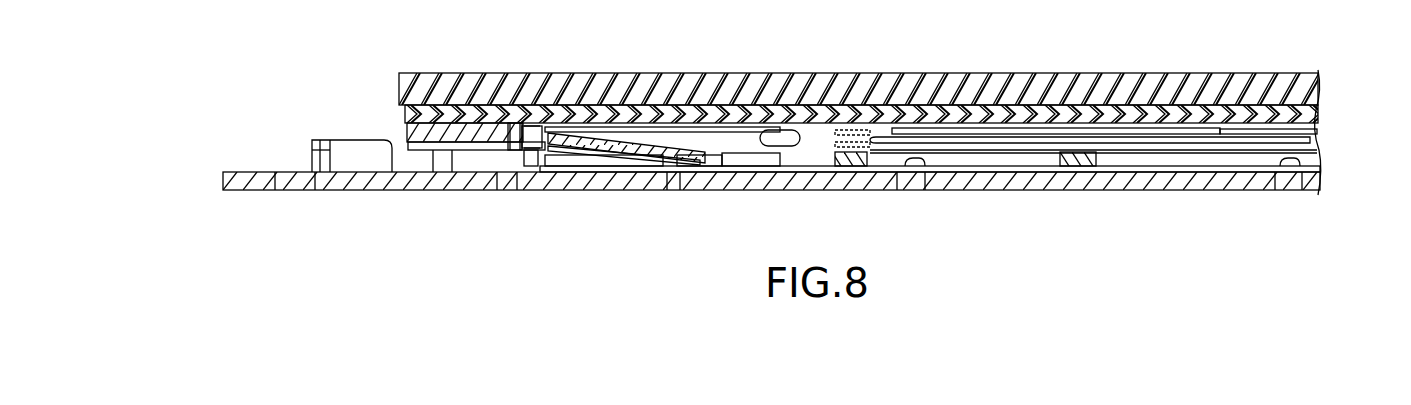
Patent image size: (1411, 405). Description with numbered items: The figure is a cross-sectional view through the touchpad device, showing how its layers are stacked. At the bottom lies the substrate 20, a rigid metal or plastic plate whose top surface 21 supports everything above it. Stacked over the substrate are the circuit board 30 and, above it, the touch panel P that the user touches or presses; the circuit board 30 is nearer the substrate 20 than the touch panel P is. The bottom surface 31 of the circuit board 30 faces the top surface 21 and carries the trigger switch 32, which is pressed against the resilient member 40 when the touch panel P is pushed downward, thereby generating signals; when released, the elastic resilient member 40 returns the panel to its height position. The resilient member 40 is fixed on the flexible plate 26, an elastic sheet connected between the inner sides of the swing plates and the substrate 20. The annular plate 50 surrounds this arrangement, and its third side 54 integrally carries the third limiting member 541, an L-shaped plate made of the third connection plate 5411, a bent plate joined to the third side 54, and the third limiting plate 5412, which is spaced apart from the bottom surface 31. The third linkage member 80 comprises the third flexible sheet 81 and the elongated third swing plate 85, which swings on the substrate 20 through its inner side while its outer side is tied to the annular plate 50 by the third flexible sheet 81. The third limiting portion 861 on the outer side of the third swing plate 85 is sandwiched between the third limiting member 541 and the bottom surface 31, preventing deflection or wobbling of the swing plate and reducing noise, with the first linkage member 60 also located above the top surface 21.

The touch panel P is at (1000, 82).
The substrate 20 is at (1078, 180).
The top surface 21 is at (1218, 128).
The flexible plate 26 is at (1022, 170).
The circuit board 30 is at (1057, 116).
The bottom surface 31 is at (783, 166).
The trigger switch 32 is at (1101, 128).
The resilient member 40 is at (1118, 166).
The annular plate 50 is at (407, 132).
The third side 54 is at (503, 138).
The third limiting member 541 is at (600, 28).
The third connection plate 5411 is at (517, 132).
The third limiting plate 5412 is at (548, 132).
The first linkage member 60 is at (840, 160).
The third linkage member 80 is at (572, 240).
The third flexible sheet 81 is at (585, 150).
The third swing plate 85 is at (650, 156).
The third limiting portion 861 is at (527, 150).